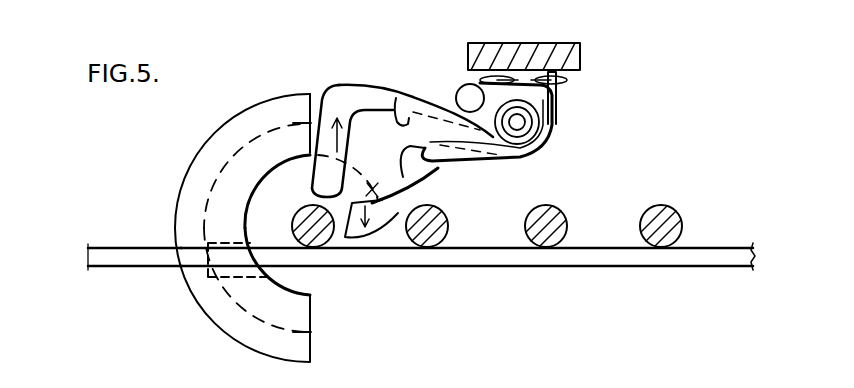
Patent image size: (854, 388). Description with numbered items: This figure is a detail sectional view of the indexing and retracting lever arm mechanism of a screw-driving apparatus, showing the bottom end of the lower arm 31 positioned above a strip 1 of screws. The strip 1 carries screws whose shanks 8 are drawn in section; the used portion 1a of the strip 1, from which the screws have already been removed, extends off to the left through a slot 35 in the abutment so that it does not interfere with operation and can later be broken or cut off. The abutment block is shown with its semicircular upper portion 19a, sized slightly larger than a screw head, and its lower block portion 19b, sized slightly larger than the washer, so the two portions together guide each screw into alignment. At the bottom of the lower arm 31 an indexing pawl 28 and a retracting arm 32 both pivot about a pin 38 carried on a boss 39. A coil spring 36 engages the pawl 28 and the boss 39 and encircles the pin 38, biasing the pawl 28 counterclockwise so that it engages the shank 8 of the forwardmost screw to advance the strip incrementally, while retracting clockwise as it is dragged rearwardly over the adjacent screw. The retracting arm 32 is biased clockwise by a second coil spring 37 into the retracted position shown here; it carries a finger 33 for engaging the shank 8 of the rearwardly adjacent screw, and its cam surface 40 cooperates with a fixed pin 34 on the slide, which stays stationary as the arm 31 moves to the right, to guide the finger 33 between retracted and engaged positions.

The strip 1 is at (726, 247).
The used portion of the strip 1a is at (88, 272).
The shank 8 is at (432, 248).
The upper portion of the abutment block 19a is at (250, 198).
The lower block portion 19b is at (209, 320).
The indexing pawl 28 is at (495, 163).
The lower arm 31 is at (563, 53).
The retracting arm 32 is at (349, 80).
The finger 33 is at (313, 96).
The fixed pin 34 is at (463, 92).
The slot 35 is at (207, 278).
The coil spring 36 is at (466, 164).
The coil spring 37 is at (425, 110).
The pin 38 is at (550, 125).
The boss 39 is at (557, 108).
The cam surface 40 is at (362, 82).